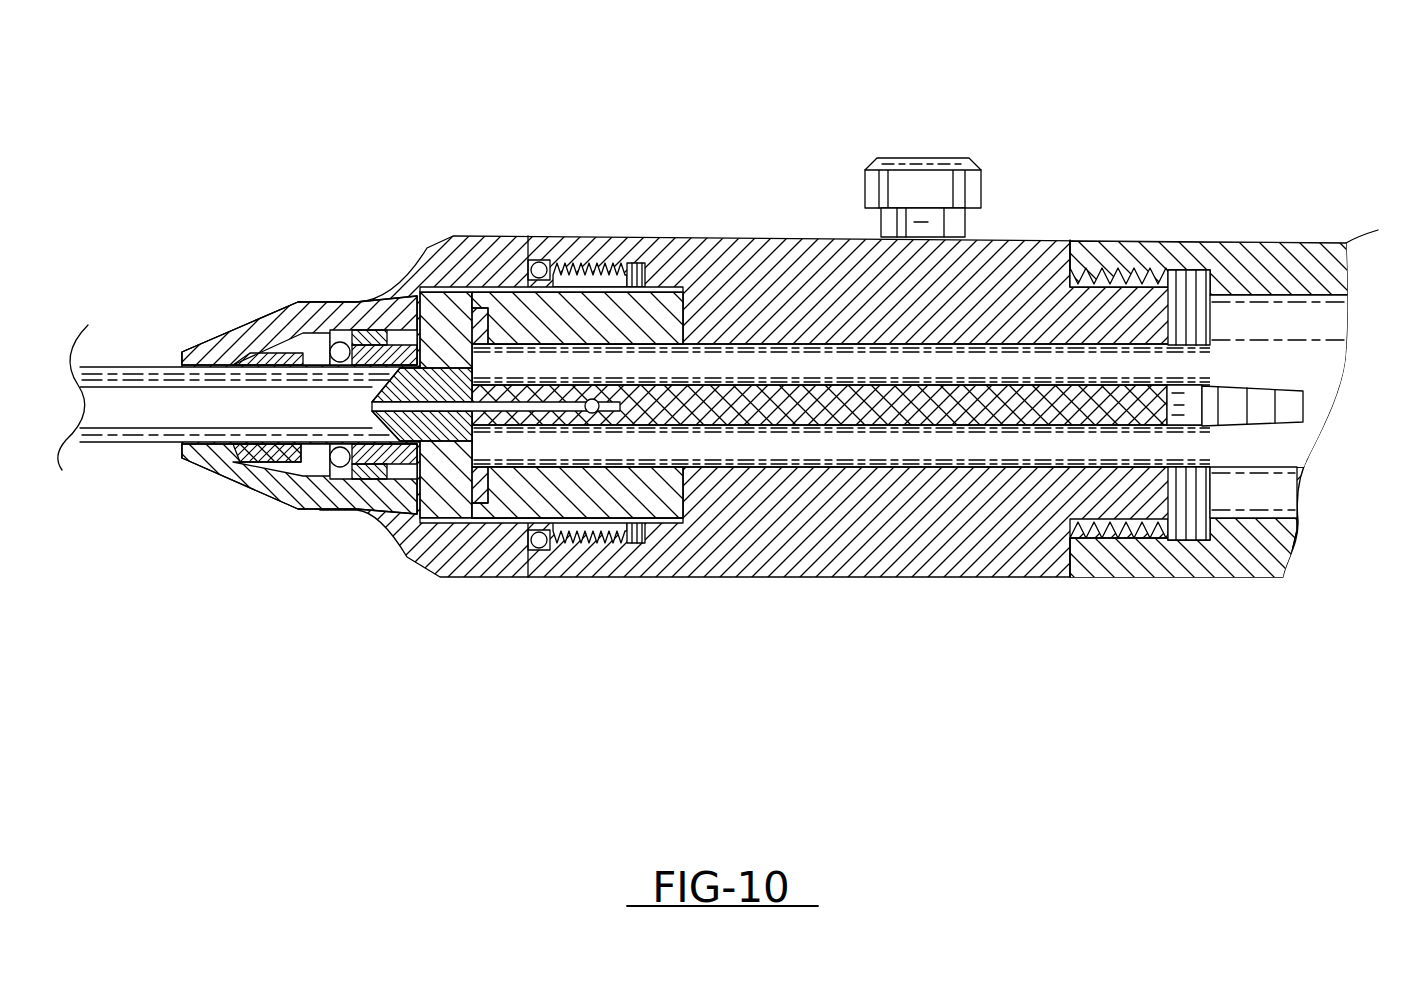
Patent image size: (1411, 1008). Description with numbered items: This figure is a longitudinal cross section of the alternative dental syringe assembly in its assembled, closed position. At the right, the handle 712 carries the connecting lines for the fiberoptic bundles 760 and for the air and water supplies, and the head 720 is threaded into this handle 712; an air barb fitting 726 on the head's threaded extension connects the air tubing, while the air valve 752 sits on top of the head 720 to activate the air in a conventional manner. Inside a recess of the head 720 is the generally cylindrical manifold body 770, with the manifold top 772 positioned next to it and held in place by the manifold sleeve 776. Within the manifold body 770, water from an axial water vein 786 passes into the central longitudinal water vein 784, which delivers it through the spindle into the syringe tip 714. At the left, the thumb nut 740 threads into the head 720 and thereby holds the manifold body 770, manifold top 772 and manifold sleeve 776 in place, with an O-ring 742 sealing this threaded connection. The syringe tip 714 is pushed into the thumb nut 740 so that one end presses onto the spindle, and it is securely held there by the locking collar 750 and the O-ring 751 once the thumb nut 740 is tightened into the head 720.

The syringe tip 714 is at (118, 408).
The thumb nut 740 is at (274, 480).
The locking collar 750 is at (283, 356).
The O-ring 751 is at (335, 478).
The manifold top 772 is at (447, 312).
The O-ring 742 is at (540, 258).
The manifold sleeve 776 is at (668, 296).
The central longitudinal water vein 784 is at (517, 402).
The axial water vein 786 is at (596, 413).
The manifold body 770 is at (668, 500).
The head 720 is at (972, 548).
The air valve 752 is at (985, 181).
The handle 712 is at (1174, 565).
The fiberoptic bundles 760 is at (1303, 366).
The air barb fitting 726 is at (1291, 405).